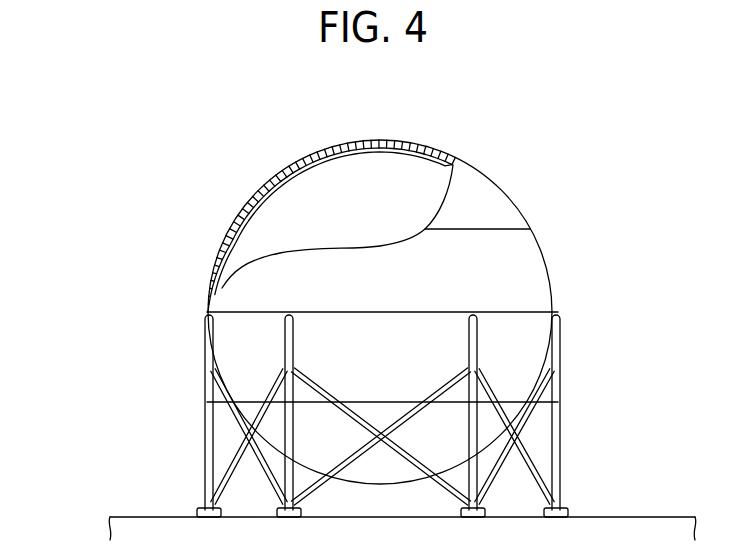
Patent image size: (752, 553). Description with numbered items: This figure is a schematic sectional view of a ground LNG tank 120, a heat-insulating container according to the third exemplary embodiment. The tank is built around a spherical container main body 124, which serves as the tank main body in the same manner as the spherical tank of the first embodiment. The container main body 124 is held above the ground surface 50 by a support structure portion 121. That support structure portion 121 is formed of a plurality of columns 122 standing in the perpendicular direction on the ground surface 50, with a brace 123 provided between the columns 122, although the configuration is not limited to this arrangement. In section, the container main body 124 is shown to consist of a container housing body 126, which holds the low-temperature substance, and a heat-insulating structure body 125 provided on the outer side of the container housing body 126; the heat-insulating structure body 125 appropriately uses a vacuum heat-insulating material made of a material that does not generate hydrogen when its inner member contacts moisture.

The ground LNG tank 120 is at (477, 150).
The support structure portion 121 is at (295, 416).
The columns 122 is at (207, 352).
The brace 123 is at (207, 403).
The container main body 124 is at (287, 165).
The heat-insulating structure body 125 is at (243, 212).
The container housing body 126 is at (232, 237).
The ground surface 50 is at (137, 515).